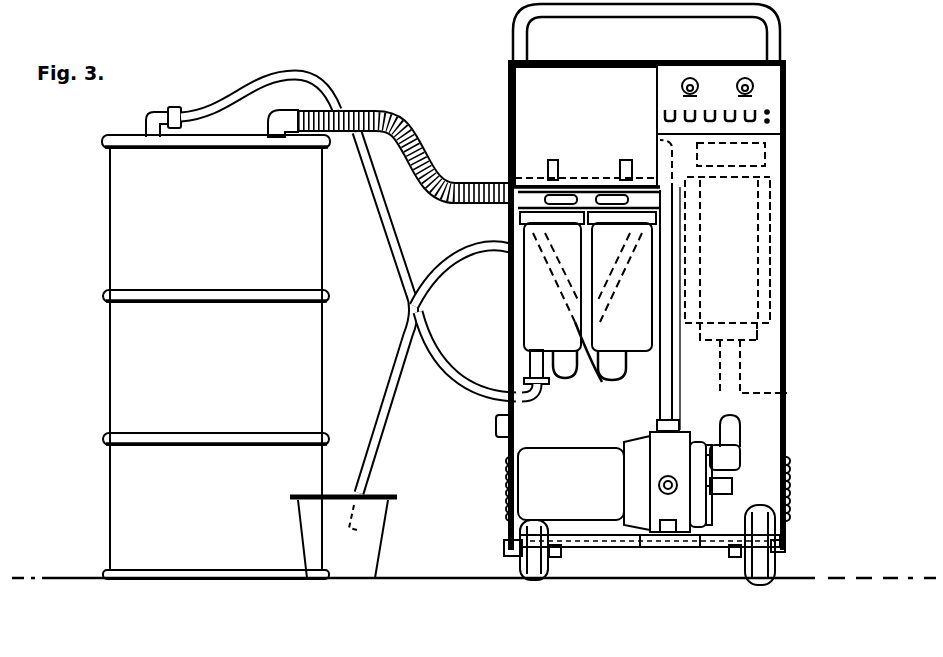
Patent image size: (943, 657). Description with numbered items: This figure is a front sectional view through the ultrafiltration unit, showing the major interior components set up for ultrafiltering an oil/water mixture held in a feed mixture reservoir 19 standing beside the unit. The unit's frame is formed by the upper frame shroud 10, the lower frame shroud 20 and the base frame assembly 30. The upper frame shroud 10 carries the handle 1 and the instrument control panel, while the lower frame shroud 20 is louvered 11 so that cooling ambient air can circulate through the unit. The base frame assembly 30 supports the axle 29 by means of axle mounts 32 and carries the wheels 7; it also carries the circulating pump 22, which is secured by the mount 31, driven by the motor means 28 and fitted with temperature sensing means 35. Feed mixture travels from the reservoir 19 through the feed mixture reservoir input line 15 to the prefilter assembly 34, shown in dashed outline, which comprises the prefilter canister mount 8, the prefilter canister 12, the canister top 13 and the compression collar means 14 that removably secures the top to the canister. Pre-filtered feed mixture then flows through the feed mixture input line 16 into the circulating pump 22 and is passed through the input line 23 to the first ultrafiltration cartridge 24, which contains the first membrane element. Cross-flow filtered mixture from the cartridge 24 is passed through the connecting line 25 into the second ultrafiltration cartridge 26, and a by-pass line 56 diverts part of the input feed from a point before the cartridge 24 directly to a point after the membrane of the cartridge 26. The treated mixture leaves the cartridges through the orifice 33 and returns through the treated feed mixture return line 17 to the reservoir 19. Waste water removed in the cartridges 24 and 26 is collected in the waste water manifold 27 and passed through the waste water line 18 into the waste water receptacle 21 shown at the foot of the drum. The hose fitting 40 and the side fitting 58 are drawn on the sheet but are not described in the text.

The handle 1 is at (786, 28).
The wheels 7 is at (518, 558).
The prefilter canister mount 8 is at (772, 271).
The upper frame shroud 10 is at (507, 93).
The louvers 11 is at (507, 449).
The prefilter canister 12 is at (773, 209).
The canister top 13 is at (765, 146).
The compression collar means 14 is at (767, 162).
The feed mixture reservoir input line 15 is at (406, 121).
The feed mixture input line 16 is at (788, 404).
The treated feed mixture return line 17 is at (386, 211).
The waste water line 18 is at (382, 349).
The feed mixture reservoir 19 is at (216, 357).
The lower frame shroud 20 is at (508, 303).
The waste water receptacle 21 is at (343, 537).
The circulating pump 22 is at (650, 430).
The input line 23 is at (700, 262).
The first ultrafiltration cartridge 24 is at (622, 281).
The connecting line 25 is at (602, 385).
The second ultrafiltration cartridge 26 is at (552, 281).
The waste water manifold 27 is at (586, 185).
The motor means 28 is at (566, 452).
The axle 29 is at (592, 548).
The base frame assembly 30 is at (640, 547).
The mount 31 is at (667, 521).
The axle mounts 32 is at (553, 552).
The orifice 33 is at (518, 361).
The prefilter assembly 34 is at (772, 242).
The temperature sensing means 35 is at (732, 486).
The hose 40 is at (289, 108).
The by-pass line 56 is at (583, 371).
The side fitting 58 is at (496, 423).